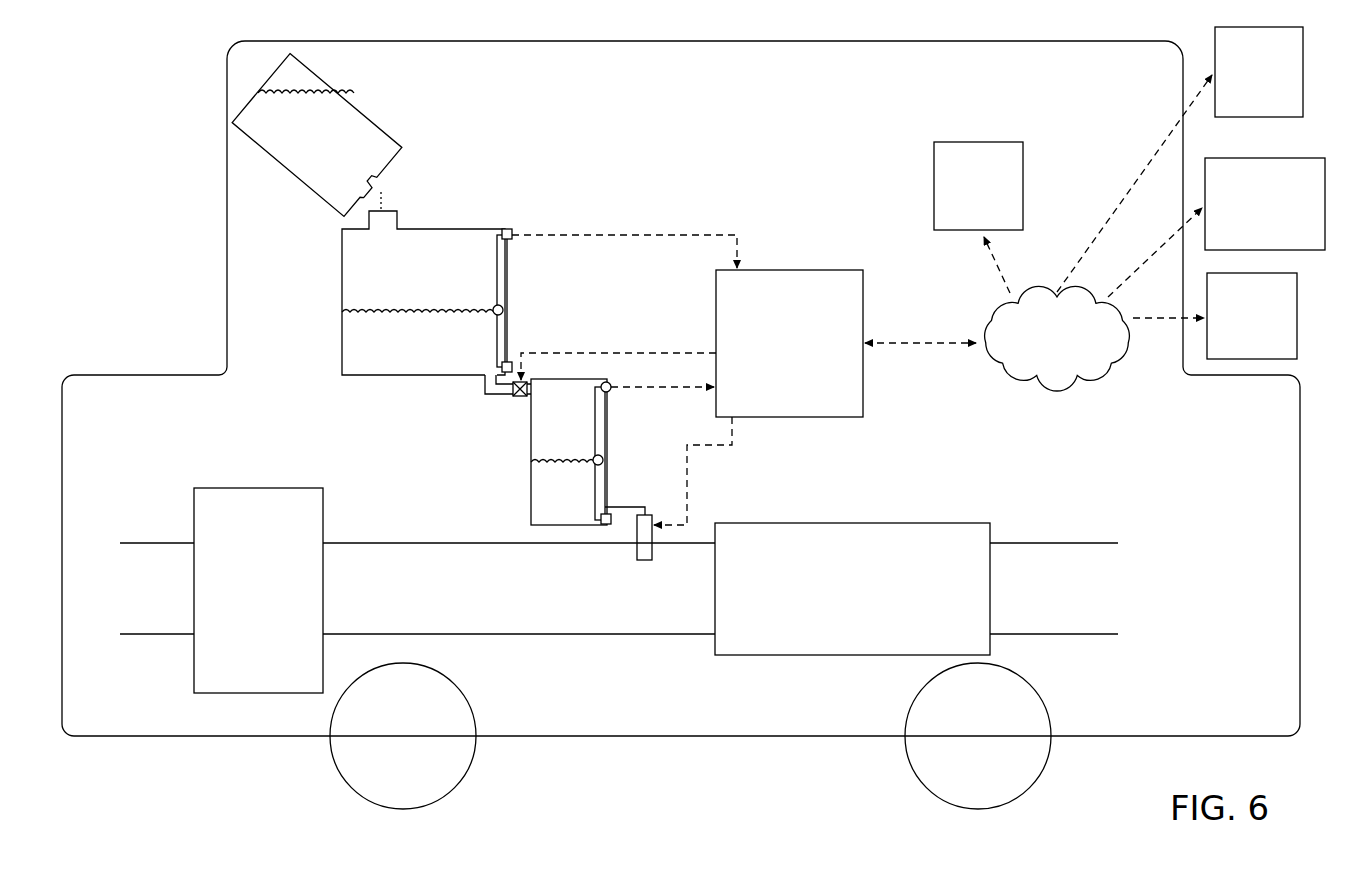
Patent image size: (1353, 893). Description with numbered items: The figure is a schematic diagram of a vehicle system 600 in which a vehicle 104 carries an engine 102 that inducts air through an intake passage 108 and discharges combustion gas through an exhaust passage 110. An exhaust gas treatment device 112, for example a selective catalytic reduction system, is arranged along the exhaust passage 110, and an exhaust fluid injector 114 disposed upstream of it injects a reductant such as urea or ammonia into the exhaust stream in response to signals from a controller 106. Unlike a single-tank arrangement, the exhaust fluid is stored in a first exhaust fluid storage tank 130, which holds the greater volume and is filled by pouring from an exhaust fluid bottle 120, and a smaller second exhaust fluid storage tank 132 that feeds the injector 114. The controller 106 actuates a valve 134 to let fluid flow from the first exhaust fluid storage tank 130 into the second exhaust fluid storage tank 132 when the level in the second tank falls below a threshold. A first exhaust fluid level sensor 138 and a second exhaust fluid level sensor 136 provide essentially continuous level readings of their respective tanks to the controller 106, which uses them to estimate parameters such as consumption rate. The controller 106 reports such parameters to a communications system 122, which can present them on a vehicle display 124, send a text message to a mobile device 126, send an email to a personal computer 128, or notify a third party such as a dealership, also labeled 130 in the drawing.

The vehicle system 600 is at (133, 102).
The vehicle 104 is at (585, 41).
The exhaust fluid bottle 120 is at (318, 136).
The first exhaust fluid storage tank 130 is at (432, 228).
The first exhaust fluid level sensor 138 is at (506, 305).
The valve 134 is at (514, 400).
The second exhaust fluid storage tank 132 is at (530, 488).
The second exhaust fluid level sensor 136 is at (604, 457).
The exhaust fluid injector 114 is at (641, 562).
The controller 106 is at (846, 343).
The engine 102 is at (258, 590).
The intake passage 108 is at (157, 588).
The exhaust passage 110 is at (720, 588).
The exhaust gas treatment device 112 is at (852, 589).
The communications system 122 is at (1098, 233).
The vehicle display 124 is at (978, 186).
The mobile device 126 is at (1259, 72).
The personal computer 128 is at (1265, 204).